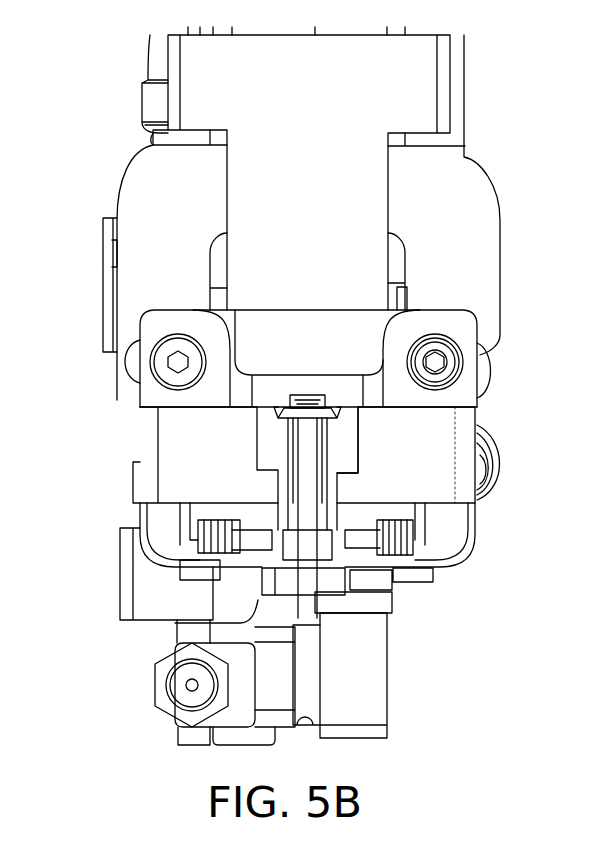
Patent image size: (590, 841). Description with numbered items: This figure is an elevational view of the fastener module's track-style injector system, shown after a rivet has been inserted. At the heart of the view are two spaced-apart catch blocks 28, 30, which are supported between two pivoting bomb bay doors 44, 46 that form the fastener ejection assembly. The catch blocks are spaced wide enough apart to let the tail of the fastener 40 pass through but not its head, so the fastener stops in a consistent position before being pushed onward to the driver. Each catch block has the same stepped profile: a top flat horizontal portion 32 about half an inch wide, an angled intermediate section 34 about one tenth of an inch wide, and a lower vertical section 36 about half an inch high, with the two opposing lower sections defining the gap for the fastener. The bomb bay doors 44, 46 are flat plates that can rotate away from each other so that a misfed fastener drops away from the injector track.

The catch block 28 is at (285, 412).
The catch block 30 is at (347, 415).
The top flat horizontal portion 32 is at (290, 403).
The angled intermediate section 34 is at (263, 420).
The lower vertical section 36 is at (172, 490).
The fastener 40 is at (305, 445).
The bomb bay door 44 is at (440, 480).
The bomb bay door 46 is at (287, 458).